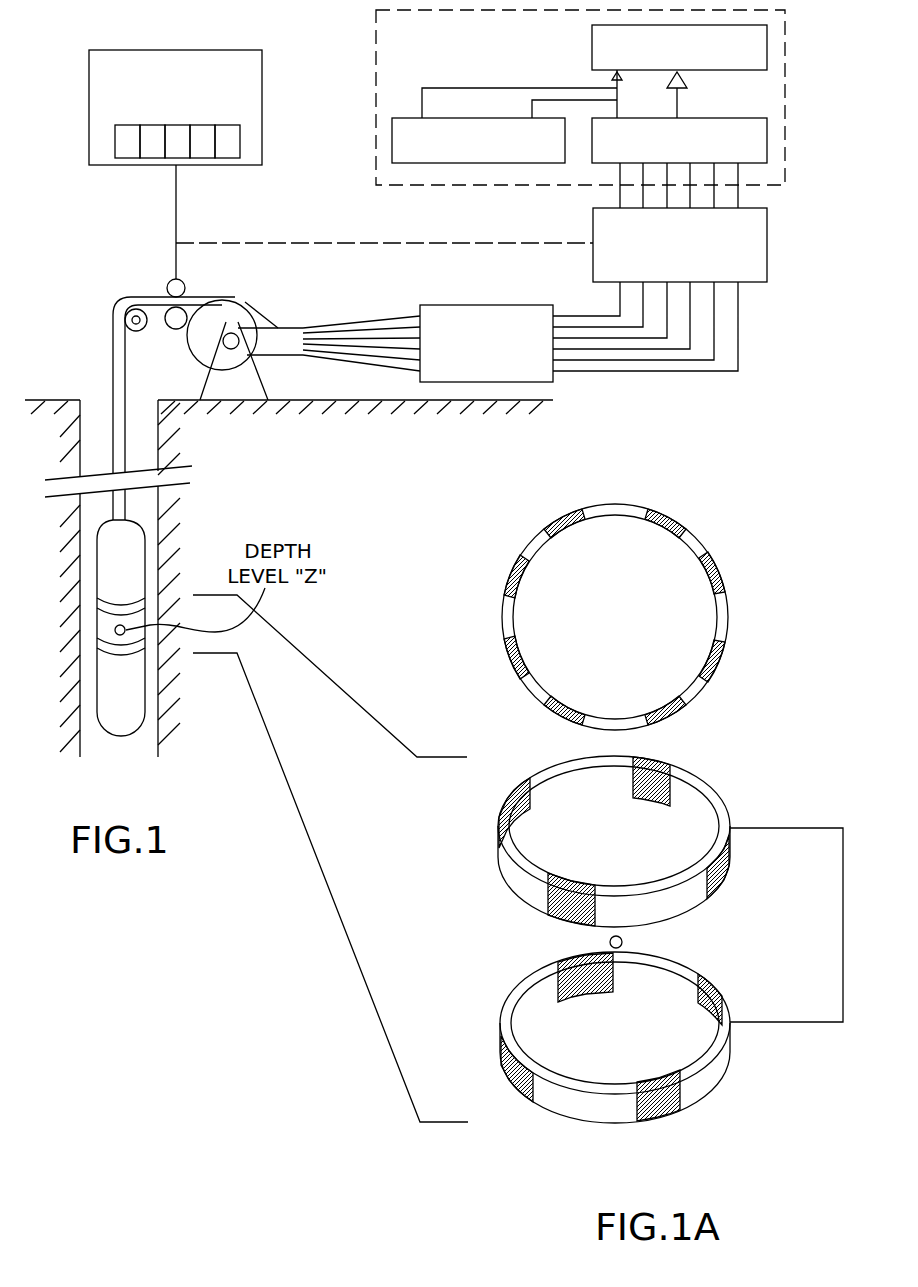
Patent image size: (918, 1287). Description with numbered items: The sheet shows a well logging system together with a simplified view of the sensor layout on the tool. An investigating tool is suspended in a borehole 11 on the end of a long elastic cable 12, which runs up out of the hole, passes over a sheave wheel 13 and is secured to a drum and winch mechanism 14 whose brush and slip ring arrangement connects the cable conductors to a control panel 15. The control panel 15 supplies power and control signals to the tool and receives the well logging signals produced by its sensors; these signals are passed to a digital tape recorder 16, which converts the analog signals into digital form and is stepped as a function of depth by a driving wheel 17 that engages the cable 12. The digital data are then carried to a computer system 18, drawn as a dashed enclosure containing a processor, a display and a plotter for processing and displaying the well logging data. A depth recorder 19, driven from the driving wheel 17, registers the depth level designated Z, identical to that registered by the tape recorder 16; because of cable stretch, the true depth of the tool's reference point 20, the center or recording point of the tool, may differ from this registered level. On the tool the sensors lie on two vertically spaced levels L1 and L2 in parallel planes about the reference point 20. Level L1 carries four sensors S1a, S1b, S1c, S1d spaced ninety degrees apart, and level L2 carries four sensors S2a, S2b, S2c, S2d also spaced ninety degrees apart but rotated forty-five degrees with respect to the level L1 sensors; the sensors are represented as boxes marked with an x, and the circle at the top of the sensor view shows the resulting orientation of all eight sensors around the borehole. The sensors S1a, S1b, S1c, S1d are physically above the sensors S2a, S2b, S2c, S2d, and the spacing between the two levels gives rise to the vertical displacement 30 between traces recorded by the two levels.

In FIG. 1, the borehole 11 is at (103, 417).
In FIG. 1, the cable 12 is at (113, 330).
In FIG. 1, the sheave wheel 13 is at (157, 325).
In FIG. 1, the drum and winch mechanism 14 is at (252, 296).
In FIG. 1, the control panel 15 is at (460, 305).
In FIG. 1, the digital tape recorder 16 is at (768, 256).
In FIG. 1, the driving wheel 17 is at (165, 281).
In FIG. 1, the computer system 18 is at (376, 68).
In FIG. 1, the depth recorder 19 is at (262, 115).
In FIG. 1, the reference point 20 is at (114, 628).
In FIG. 1A, the reference point 20 is at (622, 940).
In FIG. 1, the level L1 is at (97, 598).
In FIG. 1A, the level L1 is at (500, 852).
In FIG. 1A, the level L2 is at (500, 1040).
In FIG. 1A, the vertical displacement 30 is at (801, 925).
In FIG. 1A, the sensor S1a is at (505, 583).
In FIG. 1A, the sensor S1b is at (654, 516).
In FIG. 1A, the sensor S1c is at (725, 667).
In FIG. 1A, the sensor S1d is at (565, 728).
In FIG. 1A, the sensor S2a is at (512, 662).
In FIG. 1A, the sensor S2b is at (562, 517).
In FIG. 1A, the sensor S2c is at (722, 573).
In FIG. 1A, the sensor S2d is at (678, 710).